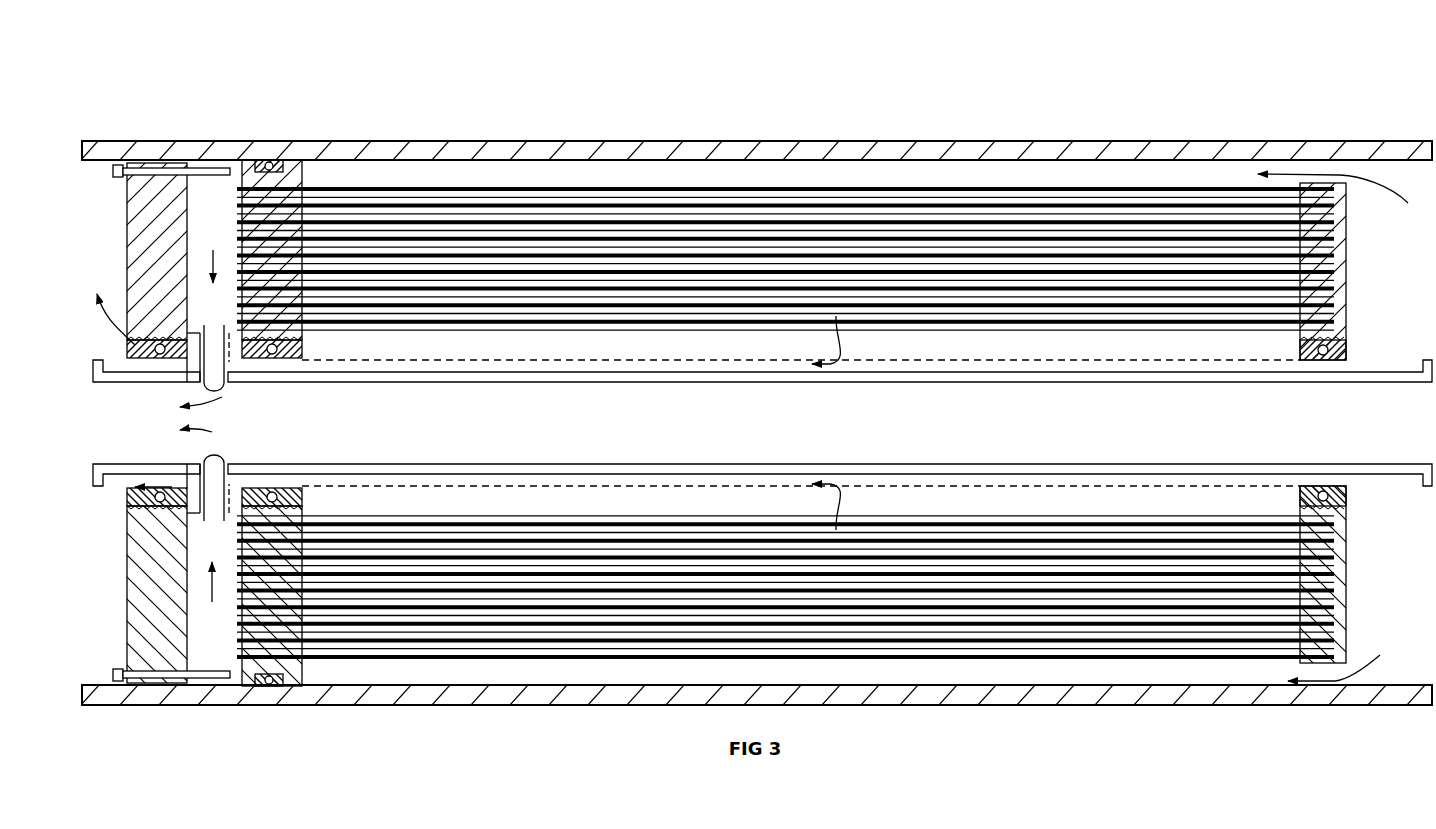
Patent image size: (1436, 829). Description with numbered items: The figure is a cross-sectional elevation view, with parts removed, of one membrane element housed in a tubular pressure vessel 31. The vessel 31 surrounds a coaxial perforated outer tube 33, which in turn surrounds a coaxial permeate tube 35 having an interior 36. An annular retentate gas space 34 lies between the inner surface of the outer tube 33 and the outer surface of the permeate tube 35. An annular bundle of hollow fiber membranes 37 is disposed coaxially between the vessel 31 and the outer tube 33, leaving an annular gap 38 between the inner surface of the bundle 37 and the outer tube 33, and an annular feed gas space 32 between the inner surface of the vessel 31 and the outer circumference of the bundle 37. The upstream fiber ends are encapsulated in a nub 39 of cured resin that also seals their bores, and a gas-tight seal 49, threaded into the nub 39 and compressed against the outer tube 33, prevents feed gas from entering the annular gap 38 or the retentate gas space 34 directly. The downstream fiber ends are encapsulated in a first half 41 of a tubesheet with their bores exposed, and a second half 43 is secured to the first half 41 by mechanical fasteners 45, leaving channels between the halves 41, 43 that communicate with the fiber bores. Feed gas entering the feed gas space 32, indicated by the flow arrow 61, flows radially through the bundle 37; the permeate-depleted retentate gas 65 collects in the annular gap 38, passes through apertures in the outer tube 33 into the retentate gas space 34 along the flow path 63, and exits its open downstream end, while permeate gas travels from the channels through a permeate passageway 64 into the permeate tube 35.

The pressure vessel 31 is at (782, 152).
The annular feed gas space 32 is at (556, 181).
The perforated outer tube 33 is at (1196, 360).
The annular retentate gas space 34 is at (714, 368).
The permeate tube 35 is at (1030, 375).
The interior of permeate tube 36 is at (546, 416).
The bundle of hollow fiber membranes 37 is at (945, 192).
The annular gap 38 is at (621, 354).
The nub 39 is at (1347, 264).
The first half of tubesheet 41 is at (288, 181).
The second half of tubesheet 43 is at (172, 198).
The mechanical fastener 45 is at (103, 164).
The gas-tight seal 49 is at (266, 163).
The inlet flow 61 is at (1335, 176).
The flow passage 63 is at (215, 238).
The permeate passageway 64 is at (235, 369).
The retentate gas 65 is at (150, 364).